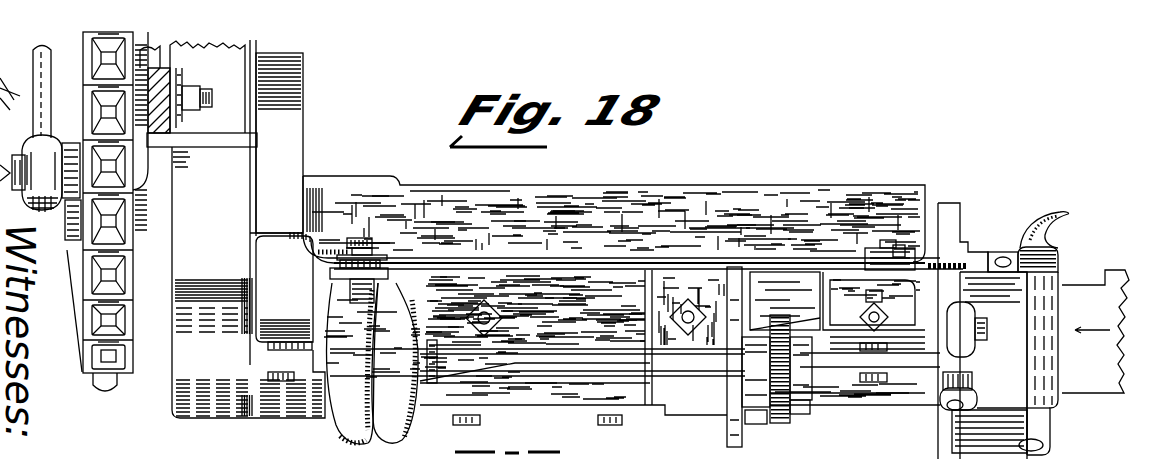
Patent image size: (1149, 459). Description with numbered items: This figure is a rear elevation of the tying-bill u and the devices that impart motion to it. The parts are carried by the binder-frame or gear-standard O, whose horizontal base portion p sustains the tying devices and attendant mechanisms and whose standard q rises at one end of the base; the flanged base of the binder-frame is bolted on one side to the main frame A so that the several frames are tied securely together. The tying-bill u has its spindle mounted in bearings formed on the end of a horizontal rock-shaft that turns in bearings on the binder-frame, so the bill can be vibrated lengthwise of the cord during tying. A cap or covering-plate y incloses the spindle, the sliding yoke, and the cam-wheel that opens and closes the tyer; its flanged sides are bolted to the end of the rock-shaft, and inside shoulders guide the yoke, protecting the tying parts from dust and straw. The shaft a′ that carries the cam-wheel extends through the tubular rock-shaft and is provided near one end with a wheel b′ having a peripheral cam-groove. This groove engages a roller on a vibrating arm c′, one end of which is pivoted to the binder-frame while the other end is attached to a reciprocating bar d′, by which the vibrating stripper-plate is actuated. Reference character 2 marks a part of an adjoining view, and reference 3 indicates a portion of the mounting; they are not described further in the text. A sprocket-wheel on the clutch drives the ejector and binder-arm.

The lever fragment 2 is at (12, 88).
The main frame A is at (155, 86).
The standard q is at (207, 87).
The binder-frame or gear-standard o is at (290, 202).
The horizontal base portion p is at (614, 219).
The vibrating arm c′ is at (328, 273).
The reciprocating bar d′ is at (590, 268).
The shaft a′ is at (537, 361).
The wheel with peripheral cam-groove b′ is at (373, 363).
The adjusting screw 3 is at (840, 345).
The cap or covering-plate y is at (982, 331).
The tying-bill u is at (1043, 333).